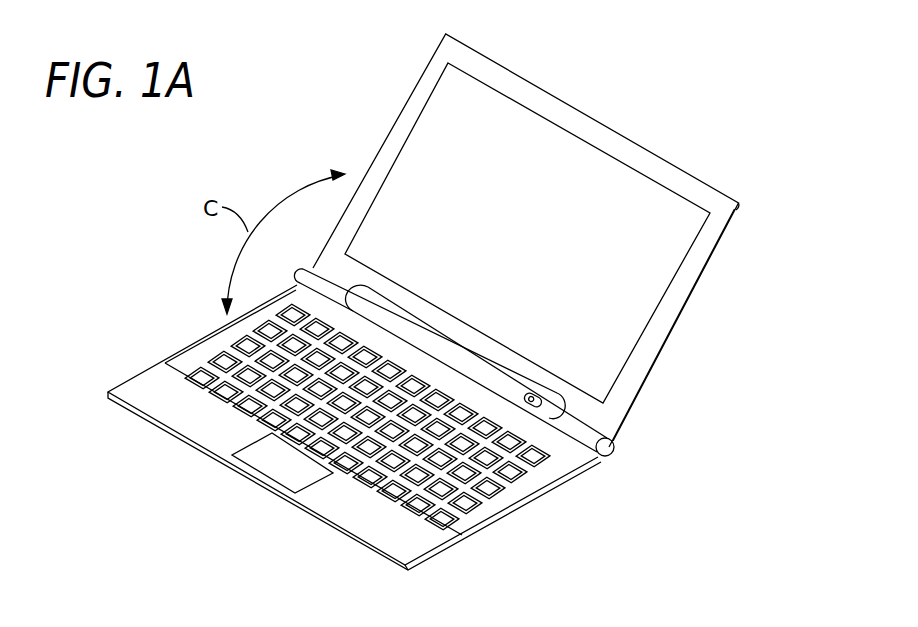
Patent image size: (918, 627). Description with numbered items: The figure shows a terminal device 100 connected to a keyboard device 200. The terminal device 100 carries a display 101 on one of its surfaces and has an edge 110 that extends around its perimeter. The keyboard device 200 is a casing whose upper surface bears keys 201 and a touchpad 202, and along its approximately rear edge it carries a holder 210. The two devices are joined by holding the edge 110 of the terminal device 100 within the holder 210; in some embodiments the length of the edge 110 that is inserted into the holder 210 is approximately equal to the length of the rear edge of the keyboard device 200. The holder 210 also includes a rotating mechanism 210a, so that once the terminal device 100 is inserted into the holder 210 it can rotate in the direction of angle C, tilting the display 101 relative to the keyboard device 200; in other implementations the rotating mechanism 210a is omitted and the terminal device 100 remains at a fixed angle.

The terminal device 100 is at (733, 238).
The display 101 is at (572, 163).
The edge 110 is at (635, 400).
The keyboard device 200 is at (525, 507).
The keys 201 is at (210, 370).
The touchpads 202 is at (273, 468).
The holder 210 is at (562, 403).
The rotating mechanism 210a is at (612, 450).